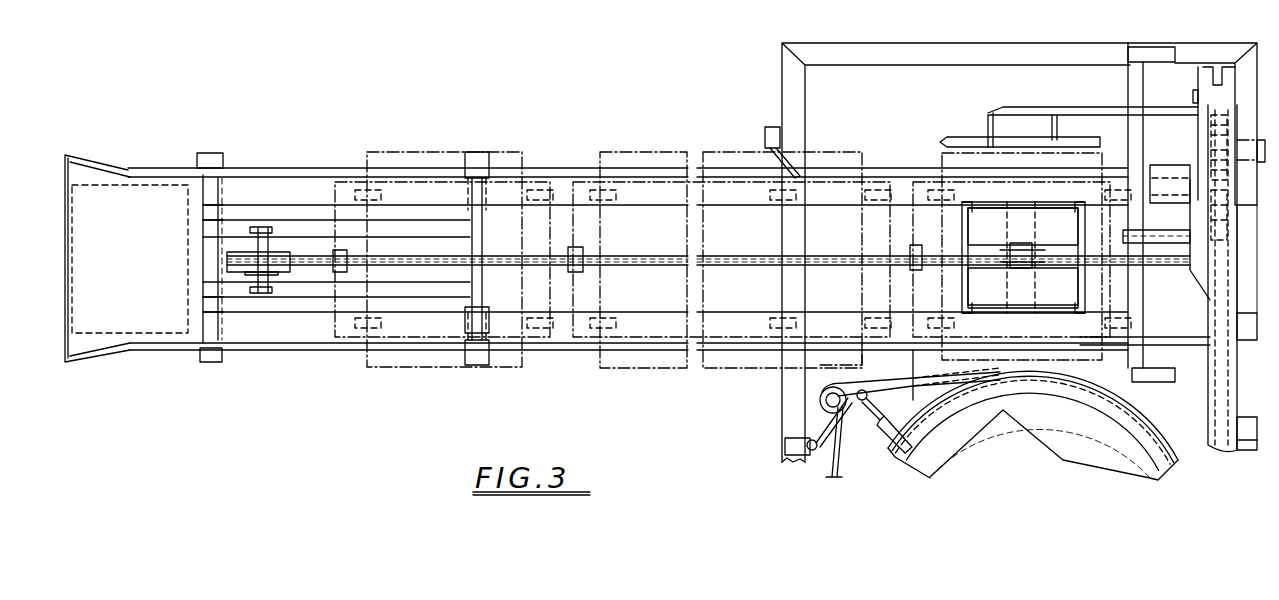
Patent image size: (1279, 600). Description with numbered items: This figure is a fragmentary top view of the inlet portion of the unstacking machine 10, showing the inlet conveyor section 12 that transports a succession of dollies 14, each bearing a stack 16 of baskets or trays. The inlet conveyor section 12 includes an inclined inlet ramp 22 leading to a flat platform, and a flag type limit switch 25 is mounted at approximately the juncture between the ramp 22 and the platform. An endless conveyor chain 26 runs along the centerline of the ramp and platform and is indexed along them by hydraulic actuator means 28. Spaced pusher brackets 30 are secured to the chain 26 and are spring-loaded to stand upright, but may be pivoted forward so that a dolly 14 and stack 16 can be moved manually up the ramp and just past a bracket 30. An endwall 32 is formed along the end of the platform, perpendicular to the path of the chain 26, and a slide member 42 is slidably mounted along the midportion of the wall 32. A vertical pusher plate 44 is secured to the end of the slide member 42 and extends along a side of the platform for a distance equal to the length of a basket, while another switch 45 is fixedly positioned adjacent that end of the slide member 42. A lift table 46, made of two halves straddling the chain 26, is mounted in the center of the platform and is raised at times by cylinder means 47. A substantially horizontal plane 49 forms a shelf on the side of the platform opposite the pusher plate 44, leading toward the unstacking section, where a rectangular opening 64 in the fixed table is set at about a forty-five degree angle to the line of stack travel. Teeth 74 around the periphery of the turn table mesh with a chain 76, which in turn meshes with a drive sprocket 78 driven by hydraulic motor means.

The unstacking machine 10 is at (1047, 35).
The inlet conveyor section 12 is at (718, 134).
The dolly 14 is at (355, 178).
The stack 16 is at (418, 152).
The inclined inlet ramp 22 is at (278, 170).
The flag type limit switch 25 is at (765, 135).
The endless conveyor chain 26 is at (496, 266).
The hydraulic actuator means 28 is at (1172, 180).
The pusher bracket 30 is at (333, 272).
The endwall 32 is at (1234, 115).
The slide member 42 is at (1192, 130).
The vertical pusher plate 44 is at (968, 140).
The switch 45 is at (1208, 70).
The lift table 46 is at (997, 222).
The cylinder means 47 is at (1020, 275).
The horizontal plane 49 is at (913, 365).
The rectangular opening 64 is at (958, 445).
The teeth 74 is at (1172, 462).
The chain 76 is at (1160, 437).
The drive sprocket 78 is at (828, 400).